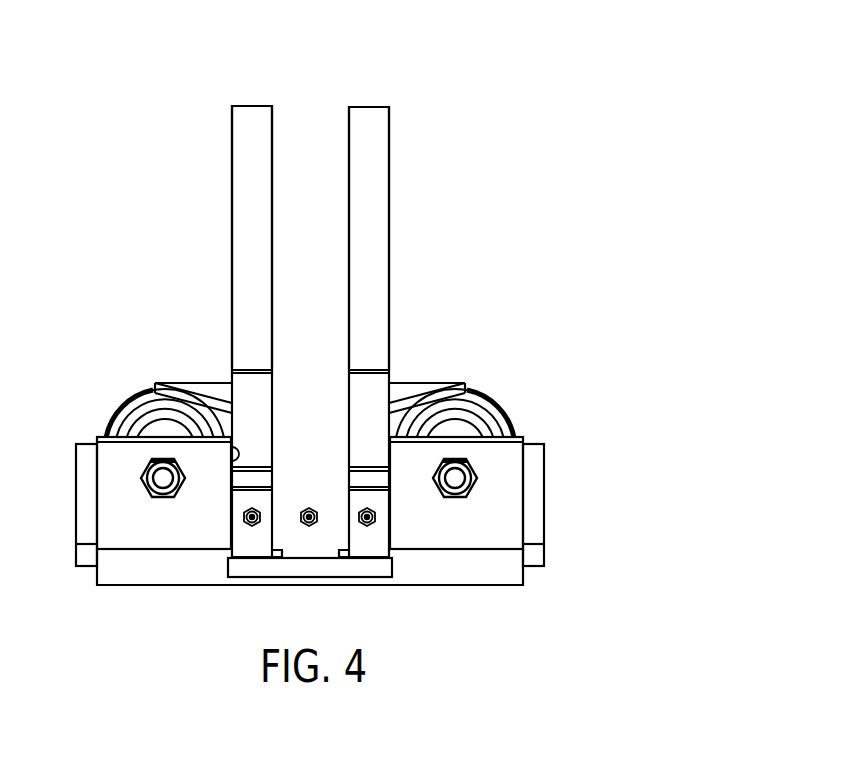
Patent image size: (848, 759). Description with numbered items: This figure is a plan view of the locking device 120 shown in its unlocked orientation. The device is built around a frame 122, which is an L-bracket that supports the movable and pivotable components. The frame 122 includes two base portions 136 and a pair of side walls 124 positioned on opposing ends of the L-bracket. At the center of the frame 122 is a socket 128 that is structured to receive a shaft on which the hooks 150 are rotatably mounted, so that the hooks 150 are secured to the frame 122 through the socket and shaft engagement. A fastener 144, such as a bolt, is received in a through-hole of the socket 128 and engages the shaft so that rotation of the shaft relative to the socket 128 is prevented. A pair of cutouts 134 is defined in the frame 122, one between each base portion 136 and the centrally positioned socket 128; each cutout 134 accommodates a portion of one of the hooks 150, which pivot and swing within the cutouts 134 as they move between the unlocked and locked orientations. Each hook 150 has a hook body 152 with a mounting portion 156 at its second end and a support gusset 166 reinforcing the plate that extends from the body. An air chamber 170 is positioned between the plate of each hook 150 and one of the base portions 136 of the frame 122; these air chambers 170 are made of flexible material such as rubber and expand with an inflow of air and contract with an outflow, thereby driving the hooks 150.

The locking device 120 is at (447, 102).
The frame 122 is at (487, 577).
The side walls 124 is at (84, 522).
The socket 128 is at (287, 466).
The cutouts 134 is at (229, 446).
The base portions 136 is at (102, 463).
The fastener 144 is at (310, 523).
The hooks 150 is at (261, 187).
The hook body 152 is at (262, 330).
The mounting portion 156 is at (332, 493).
The support gusset 166 is at (200, 392).
The air chambers 170 is at (143, 405).